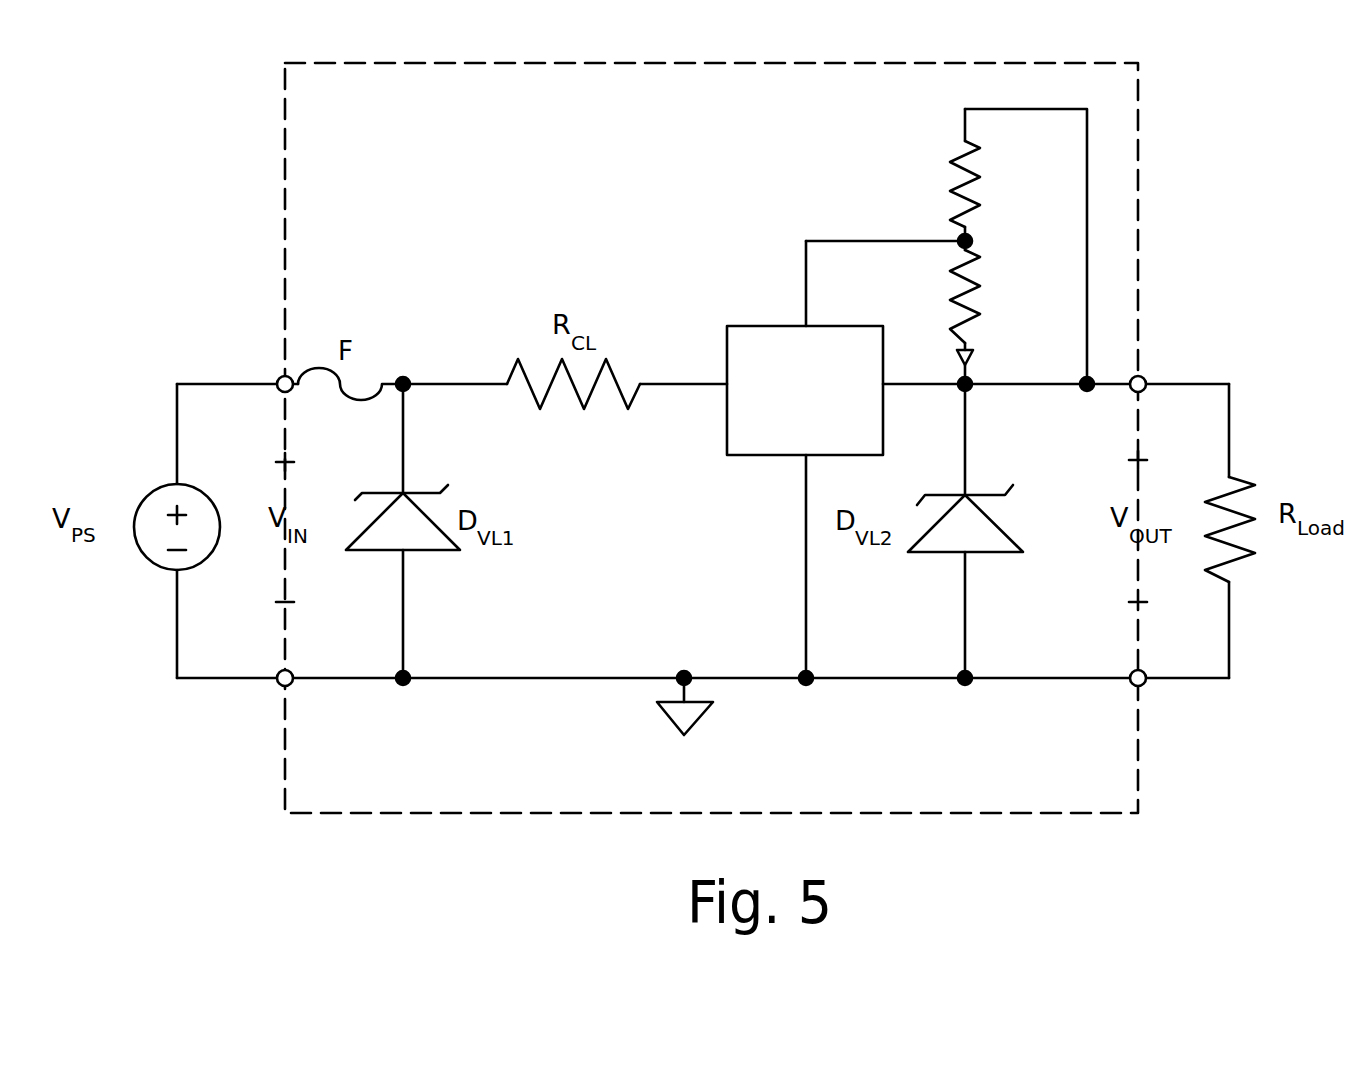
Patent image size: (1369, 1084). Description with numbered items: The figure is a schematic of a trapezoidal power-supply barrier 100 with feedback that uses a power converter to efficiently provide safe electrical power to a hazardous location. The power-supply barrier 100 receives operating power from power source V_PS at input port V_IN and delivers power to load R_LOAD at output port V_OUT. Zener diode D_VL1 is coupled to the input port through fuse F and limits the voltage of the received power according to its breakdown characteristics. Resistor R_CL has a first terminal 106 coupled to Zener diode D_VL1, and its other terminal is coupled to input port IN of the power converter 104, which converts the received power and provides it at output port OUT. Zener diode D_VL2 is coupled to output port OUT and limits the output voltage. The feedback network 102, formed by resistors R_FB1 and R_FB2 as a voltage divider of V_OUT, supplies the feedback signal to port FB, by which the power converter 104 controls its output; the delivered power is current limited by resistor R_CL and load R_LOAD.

The power-supply barrier 100 is at (683, 150).
The feedback network 102 is at (926, 196).
The power converter 104 is at (826, 401).
The first terminal 106 is at (471, 372).